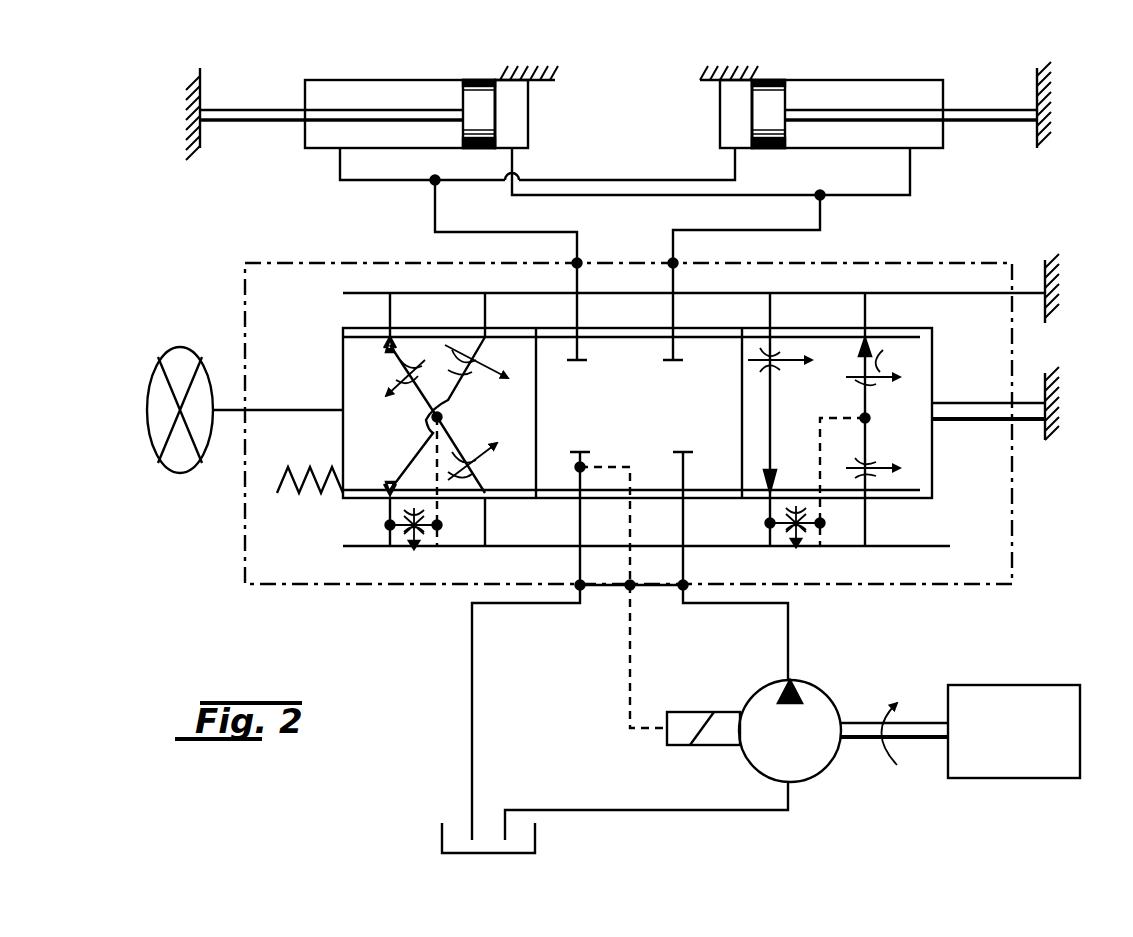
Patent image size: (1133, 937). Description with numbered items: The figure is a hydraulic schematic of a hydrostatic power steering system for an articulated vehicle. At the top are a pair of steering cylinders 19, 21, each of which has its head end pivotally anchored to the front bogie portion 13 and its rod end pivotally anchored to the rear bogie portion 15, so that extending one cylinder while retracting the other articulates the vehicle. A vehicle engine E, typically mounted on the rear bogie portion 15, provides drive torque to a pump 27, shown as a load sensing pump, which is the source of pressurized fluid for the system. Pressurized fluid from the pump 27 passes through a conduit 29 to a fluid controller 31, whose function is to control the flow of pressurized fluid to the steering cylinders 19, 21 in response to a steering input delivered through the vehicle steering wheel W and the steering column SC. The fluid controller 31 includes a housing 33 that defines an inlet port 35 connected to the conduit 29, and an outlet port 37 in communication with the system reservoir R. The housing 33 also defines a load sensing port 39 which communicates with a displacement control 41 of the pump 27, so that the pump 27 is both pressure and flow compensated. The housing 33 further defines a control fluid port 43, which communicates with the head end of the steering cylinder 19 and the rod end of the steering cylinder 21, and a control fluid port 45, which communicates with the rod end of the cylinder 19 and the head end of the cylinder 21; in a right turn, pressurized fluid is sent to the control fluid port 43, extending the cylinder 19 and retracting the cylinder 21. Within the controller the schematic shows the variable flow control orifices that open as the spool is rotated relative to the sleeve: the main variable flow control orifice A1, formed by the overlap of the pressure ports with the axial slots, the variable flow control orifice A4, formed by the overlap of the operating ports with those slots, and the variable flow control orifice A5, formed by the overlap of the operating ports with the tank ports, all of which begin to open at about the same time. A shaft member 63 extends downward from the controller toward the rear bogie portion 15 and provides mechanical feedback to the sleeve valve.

The front bogie portion 13 is at (700, 76).
The rear bogie portion 15 is at (188, 70).
The steering cylinder 19 is at (385, 80).
The steering cylinder 21 is at (862, 80).
The pump 27 is at (828, 696).
The conduit 29 is at (790, 628).
The fluid controller 31 is at (410, 592).
The housing 33 is at (925, 548).
The inlet port 35 is at (684, 584).
The outlet port 37 is at (580, 584).
The load sensing port 39 is at (630, 590).
The displacement control 41 is at (697, 715).
The control fluid port 43 is at (668, 252).
The control fluid port 45 is at (585, 252).
The shaft member 63 is at (1030, 403).
The vehicle steering wheel W is at (174, 352).
The steering column SC is at (305, 413).
The vehicle engine E is at (1014, 731).
The system reservoir R is at (538, 838).
The main variable flow control orifice A1 is at (482, 460).
The variable flow control orifice A4 is at (397, 380).
The variable flow control orifice A5 is at (470, 372).